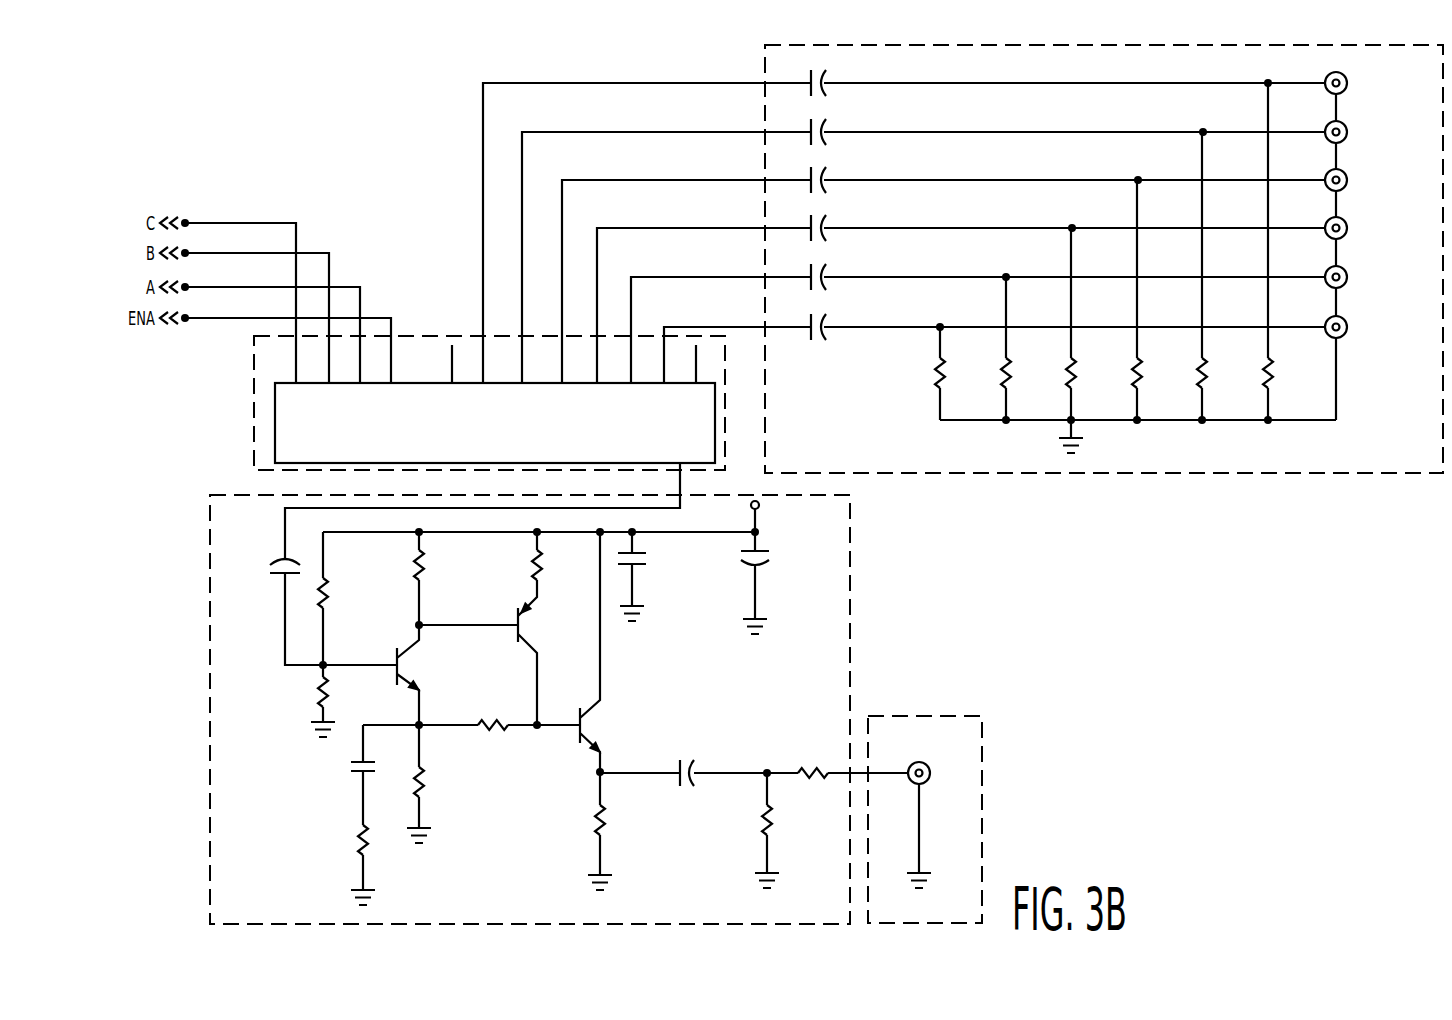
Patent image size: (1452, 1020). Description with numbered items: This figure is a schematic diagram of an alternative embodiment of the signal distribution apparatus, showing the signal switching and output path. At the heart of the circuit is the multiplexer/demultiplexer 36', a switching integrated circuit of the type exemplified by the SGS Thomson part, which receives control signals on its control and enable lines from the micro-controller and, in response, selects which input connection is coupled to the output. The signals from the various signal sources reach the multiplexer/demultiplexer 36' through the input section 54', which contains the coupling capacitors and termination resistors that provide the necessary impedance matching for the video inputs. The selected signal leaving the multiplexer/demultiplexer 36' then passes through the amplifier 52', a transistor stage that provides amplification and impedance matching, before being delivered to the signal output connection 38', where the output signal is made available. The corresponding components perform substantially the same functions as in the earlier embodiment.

The multiplexer/demultiplexer 36' is at (504, 321).
The input section 54' is at (1104, 295).
The amplifier 52' is at (561, 709).
The signal output connection 38' is at (958, 819).